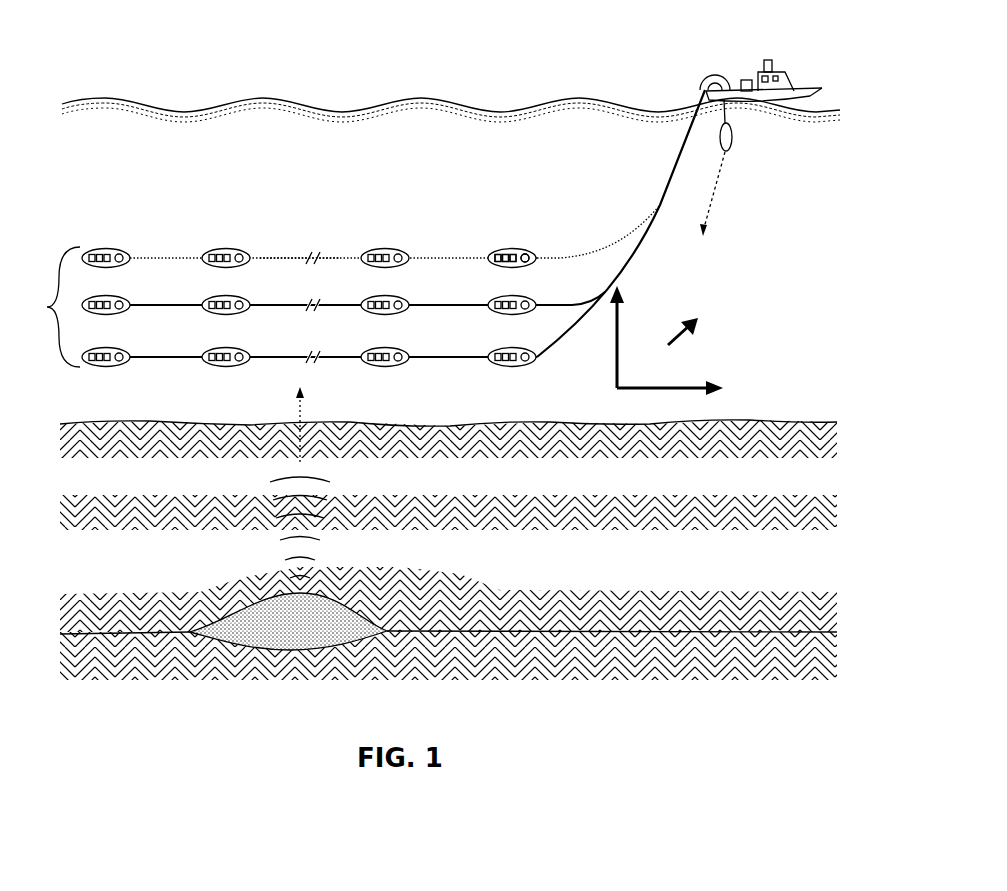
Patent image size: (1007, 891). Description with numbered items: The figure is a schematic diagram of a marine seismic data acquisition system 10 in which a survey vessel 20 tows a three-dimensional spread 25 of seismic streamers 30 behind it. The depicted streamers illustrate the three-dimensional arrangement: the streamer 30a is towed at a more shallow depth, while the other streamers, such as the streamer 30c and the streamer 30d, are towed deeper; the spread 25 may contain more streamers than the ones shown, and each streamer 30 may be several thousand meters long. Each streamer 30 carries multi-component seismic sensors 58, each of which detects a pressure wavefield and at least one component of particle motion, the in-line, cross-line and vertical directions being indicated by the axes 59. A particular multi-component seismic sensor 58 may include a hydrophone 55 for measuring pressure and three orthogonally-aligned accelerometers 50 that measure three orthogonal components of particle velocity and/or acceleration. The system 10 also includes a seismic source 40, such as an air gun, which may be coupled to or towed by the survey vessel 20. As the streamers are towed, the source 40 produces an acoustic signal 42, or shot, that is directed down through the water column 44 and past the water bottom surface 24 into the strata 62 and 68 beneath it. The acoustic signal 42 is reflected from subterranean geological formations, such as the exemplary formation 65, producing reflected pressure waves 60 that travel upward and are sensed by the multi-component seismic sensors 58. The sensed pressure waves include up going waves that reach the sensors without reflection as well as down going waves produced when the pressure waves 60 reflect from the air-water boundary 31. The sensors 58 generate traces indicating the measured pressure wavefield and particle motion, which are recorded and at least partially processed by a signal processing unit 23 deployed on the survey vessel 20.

The marine seismic data acquisition system 10 is at (250, 66).
The survey vessel 20 is at (810, 90).
The signal processing unit 23 is at (745, 80).
The water bottom surface 24 is at (437, 422).
The three-dimensional spread 25 is at (47, 307).
The seismic streamer 30 is at (445, 258).
The seismic streamer 30a is at (300, 258).
The seismic streamer 30c is at (160, 357).
The fourth seismic streamer 30d is at (170, 305).
The air-water boundary 31 is at (400, 97).
The seismic source 40 is at (734, 140).
The acoustic signal 42 is at (718, 186).
The water column 44 is at (731, 283).
The accelerometers 50 is at (513, 254).
The hydrophone 55 is at (527, 255).
The multi-component seismic sensor 58 is at (107, 248).
The axes 59 is at (606, 394).
The pressure waves 60 is at (262, 547).
The strata 62 is at (431, 609).
The formation 65 is at (288, 637).
The strata 68 is at (431, 671).